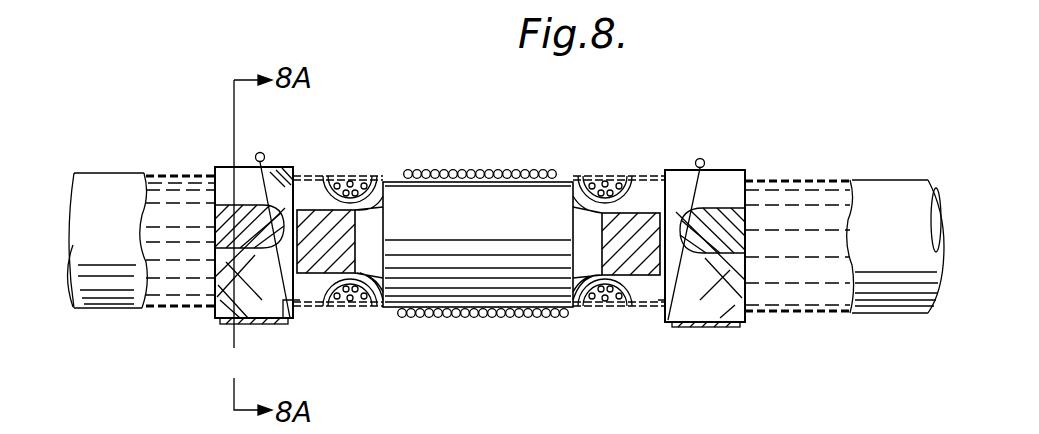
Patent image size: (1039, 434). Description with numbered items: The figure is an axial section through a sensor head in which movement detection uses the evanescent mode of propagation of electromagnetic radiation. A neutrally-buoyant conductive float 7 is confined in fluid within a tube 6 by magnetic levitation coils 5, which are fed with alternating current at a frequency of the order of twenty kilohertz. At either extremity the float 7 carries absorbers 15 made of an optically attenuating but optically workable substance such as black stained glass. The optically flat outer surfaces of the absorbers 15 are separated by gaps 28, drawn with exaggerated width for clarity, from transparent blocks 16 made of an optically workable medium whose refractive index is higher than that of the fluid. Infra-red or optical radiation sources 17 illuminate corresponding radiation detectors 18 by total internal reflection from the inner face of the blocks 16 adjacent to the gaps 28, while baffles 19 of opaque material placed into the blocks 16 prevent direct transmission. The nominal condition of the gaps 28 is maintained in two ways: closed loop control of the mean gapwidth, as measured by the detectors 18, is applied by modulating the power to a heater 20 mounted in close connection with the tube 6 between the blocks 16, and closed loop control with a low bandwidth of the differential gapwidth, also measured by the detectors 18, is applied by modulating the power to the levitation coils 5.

The magnetic levitation coil 5 is at (338, 180).
The tube 6 is at (862, 182).
The neutrally-buoyant conductive float 7 is at (432, 288).
The absorber 15 is at (298, 212).
The transparent block 16 is at (222, 298).
The radiation source 17 is at (259, 153).
The radiation detector 18 is at (253, 322).
The baffle 19 is at (228, 215).
The heater 20 is at (438, 168).
The gap 28 is at (272, 318).